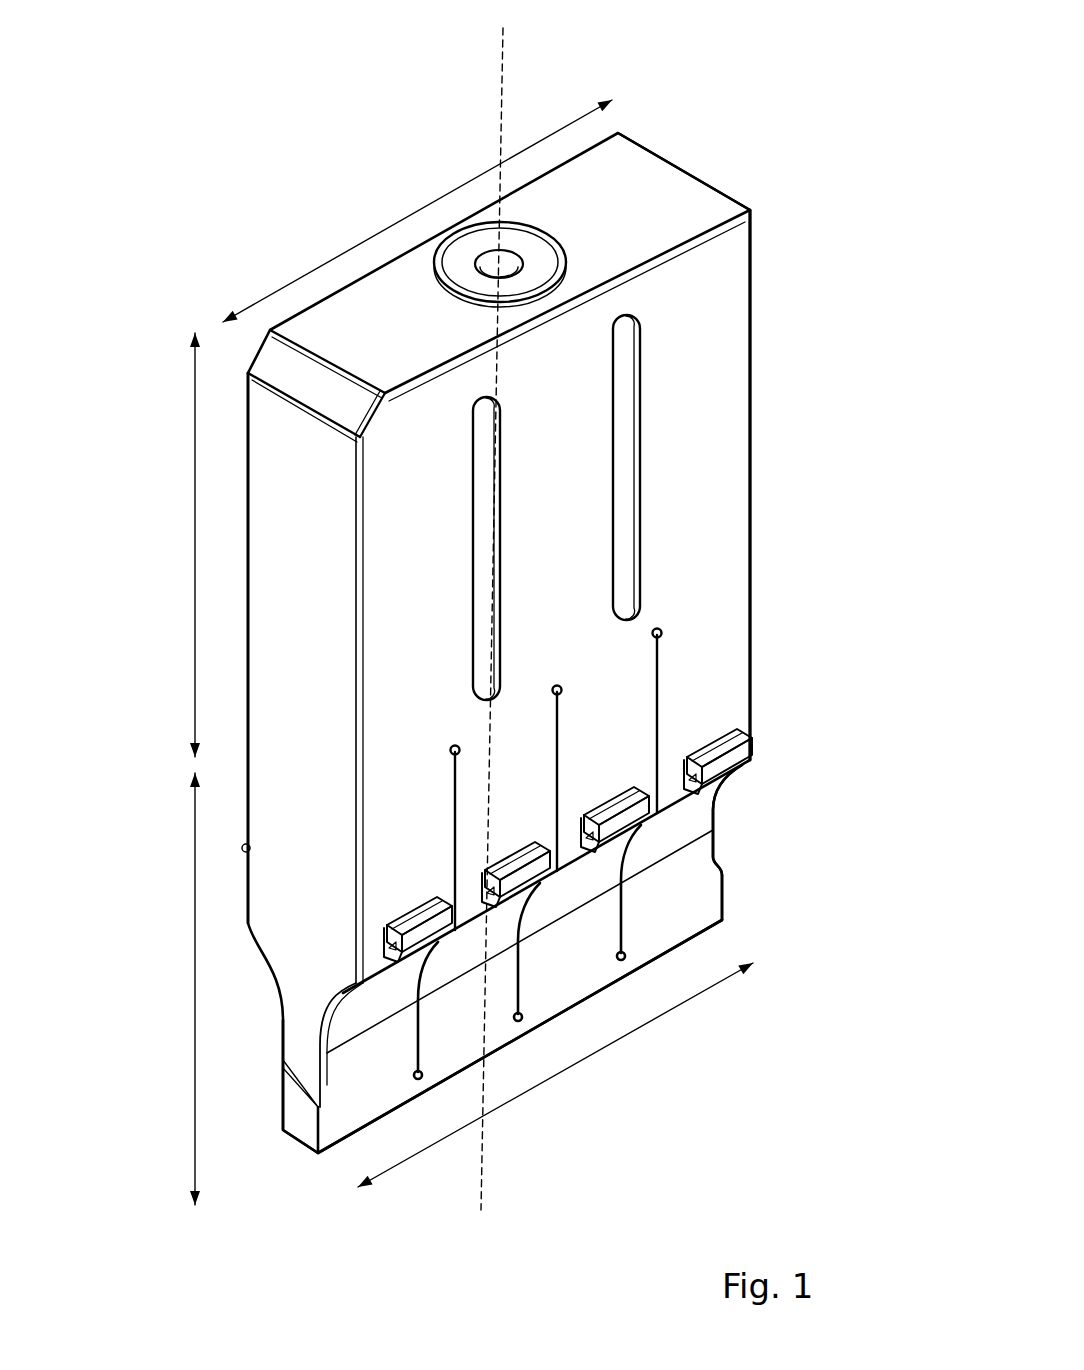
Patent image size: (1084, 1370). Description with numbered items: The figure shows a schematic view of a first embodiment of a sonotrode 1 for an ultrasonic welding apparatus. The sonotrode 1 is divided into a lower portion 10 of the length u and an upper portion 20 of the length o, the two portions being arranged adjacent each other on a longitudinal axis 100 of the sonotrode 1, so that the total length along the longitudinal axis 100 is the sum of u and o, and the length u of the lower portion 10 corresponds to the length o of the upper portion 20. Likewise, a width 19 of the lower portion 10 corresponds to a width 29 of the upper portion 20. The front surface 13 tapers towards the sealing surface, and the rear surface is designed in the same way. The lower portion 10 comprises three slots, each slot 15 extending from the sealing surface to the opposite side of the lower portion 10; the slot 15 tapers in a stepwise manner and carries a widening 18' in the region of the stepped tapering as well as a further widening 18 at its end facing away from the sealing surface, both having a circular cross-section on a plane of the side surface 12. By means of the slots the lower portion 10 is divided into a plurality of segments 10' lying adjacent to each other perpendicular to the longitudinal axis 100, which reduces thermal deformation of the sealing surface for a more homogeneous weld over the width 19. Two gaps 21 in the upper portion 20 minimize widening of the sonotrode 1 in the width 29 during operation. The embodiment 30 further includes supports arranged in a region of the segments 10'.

The sonotrode 1 is at (385, 165).
The longitudinal axis 100 is at (508, 605).
The side surface 12 is at (560, 327).
The gaps 21 is at (625, 353).
The upper portion 20 is at (695, 432).
The lower portion 10 is at (771, 446).
The segments 10' is at (502, 1040).
The front surface 13 is at (317, 620).
The width of the upper portion 29 is at (417, 211).
The length of the upper portion o is at (180, 545).
The length of the lower portion u is at (181, 989).
The width of the lower portion 19 is at (555, 1075).
The slot 15 is at (525, 905).
The embodiment 30 is at (710, 745).
The widening 18 is at (379, 780).
The widening 18' is at (354, 1021).